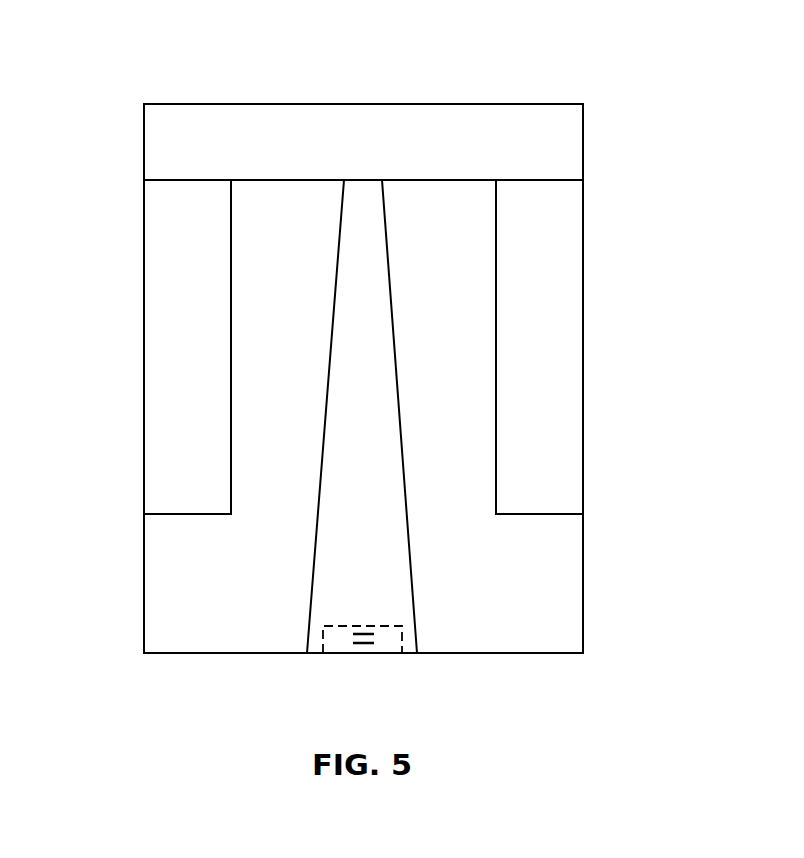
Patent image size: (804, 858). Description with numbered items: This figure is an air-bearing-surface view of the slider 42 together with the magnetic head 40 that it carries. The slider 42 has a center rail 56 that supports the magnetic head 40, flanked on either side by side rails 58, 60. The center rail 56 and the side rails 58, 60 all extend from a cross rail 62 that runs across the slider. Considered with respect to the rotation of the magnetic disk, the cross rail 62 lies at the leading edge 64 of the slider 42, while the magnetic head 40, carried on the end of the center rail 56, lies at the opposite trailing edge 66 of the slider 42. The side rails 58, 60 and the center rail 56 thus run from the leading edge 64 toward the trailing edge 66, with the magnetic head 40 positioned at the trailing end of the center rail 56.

The magnetic head 40 is at (342, 643).
The slider 42 is at (143, 604).
The center rail 56 is at (348, 293).
The side rail 58 is at (160, 259).
The side rail 60 is at (566, 258).
The cross rail 62 is at (285, 117).
The leading edge 64 is at (463, 103).
The trailing edge 66 is at (482, 653).